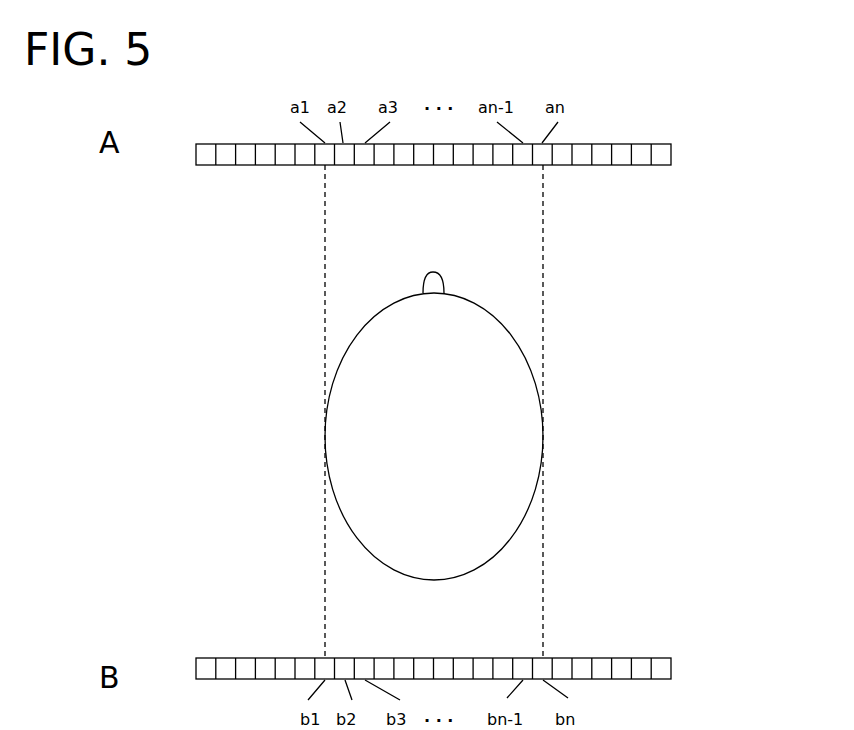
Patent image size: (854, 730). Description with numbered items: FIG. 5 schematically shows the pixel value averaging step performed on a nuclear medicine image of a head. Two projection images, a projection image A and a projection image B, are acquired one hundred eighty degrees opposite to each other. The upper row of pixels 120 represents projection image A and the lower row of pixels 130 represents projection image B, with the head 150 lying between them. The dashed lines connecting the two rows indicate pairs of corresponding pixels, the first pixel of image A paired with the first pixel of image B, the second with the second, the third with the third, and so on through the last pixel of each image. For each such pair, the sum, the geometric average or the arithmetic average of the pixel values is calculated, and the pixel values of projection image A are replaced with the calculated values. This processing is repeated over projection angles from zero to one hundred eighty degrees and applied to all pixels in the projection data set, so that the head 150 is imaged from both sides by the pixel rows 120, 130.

The first array of elements (transmitters) 120 is at (671, 155).
The second array of elements (receivers) 130 is at (671, 670).
The object (patient head) 150 is at (493, 441).